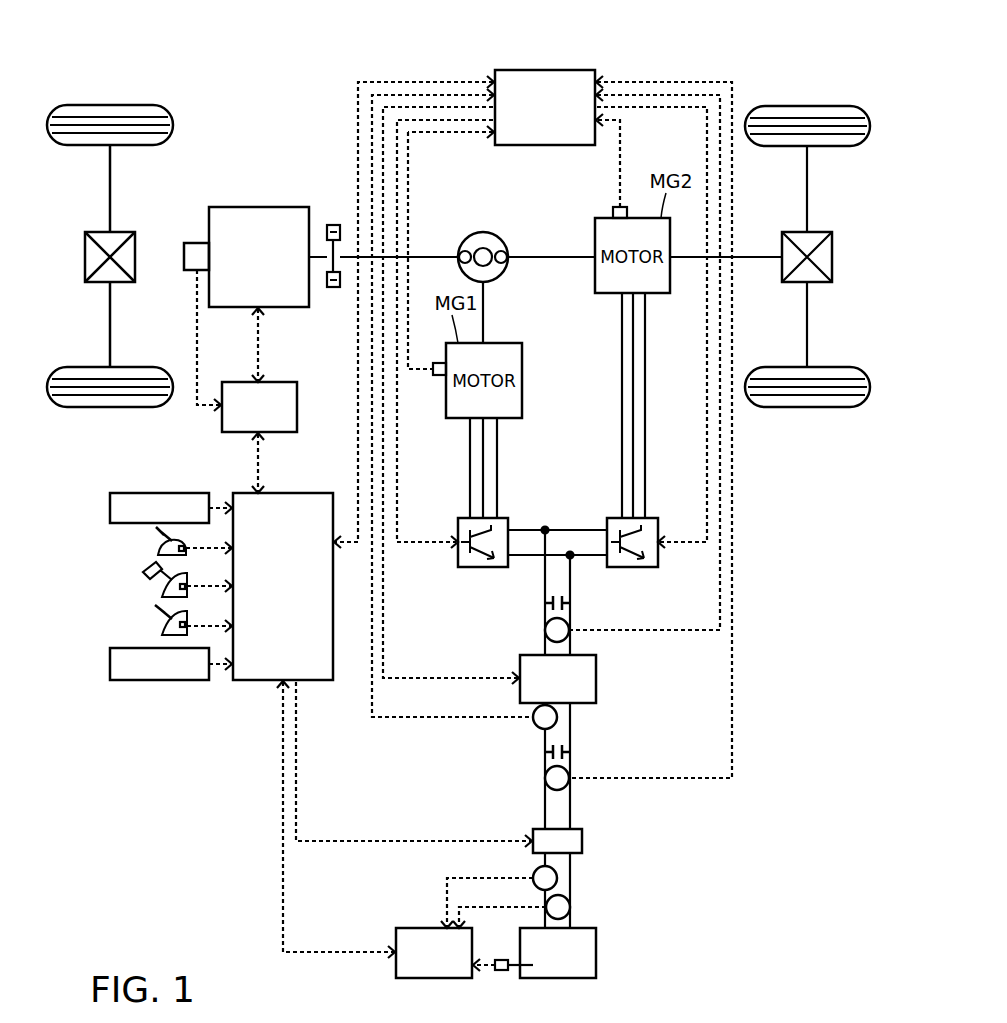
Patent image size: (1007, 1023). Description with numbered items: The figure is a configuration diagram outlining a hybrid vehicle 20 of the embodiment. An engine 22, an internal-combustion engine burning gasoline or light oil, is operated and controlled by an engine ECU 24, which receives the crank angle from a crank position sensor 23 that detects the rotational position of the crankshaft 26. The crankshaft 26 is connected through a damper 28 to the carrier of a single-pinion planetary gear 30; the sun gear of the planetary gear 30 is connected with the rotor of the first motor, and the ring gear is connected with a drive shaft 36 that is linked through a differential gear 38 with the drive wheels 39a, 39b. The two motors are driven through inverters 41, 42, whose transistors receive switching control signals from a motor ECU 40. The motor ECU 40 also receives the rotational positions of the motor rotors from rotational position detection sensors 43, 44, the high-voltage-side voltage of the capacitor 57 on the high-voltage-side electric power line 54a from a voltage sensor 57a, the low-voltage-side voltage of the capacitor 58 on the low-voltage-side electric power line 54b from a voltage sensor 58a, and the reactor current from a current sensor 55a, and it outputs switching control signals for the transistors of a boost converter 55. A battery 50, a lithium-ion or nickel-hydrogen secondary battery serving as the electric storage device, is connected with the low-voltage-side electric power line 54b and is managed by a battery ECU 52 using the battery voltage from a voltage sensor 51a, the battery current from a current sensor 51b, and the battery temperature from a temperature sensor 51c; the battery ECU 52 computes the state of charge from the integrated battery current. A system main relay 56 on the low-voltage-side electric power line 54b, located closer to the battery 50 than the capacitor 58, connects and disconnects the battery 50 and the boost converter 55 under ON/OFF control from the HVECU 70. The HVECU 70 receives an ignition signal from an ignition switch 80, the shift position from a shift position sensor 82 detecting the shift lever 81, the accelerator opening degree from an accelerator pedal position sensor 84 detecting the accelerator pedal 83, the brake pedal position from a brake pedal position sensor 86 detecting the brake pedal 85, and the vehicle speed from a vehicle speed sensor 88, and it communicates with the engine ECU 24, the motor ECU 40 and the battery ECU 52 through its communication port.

The hybrid vehicle 20 is at (662, 40).
The engine 22 is at (259, 207).
The crank position sensor 23 is at (197, 243).
The engine ECU 24 is at (282, 382).
The crankshaft 26 is at (313, 262).
The damper 28 is at (333, 225).
The planetary gear 30 is at (480, 232).
The drive shaft 36 is at (757, 257).
The differential gear 38 is at (818, 232).
The drive wheel 39a is at (808, 105).
The drive wheel 39b is at (808, 407).
The motor ECU 40 is at (546, 70).
The inverter 41 is at (500, 518).
The inverter 42 is at (650, 518).
The rotational position detection sensor 43 is at (436, 375).
The rotational position detection sensor 44 is at (627, 205).
The battery 50 is at (596, 953).
The voltage sensor 51a is at (570, 907).
The current sensor 51b is at (557, 878).
The temperature sensor 51c is at (501, 970).
The battery ECU 52 is at (422, 928).
The high-voltage-side electric power line 54a is at (570, 582).
The low-voltage-side electric power line 54b is at (570, 802).
The boost converter 55 is at (596, 680).
The current sensor 55a is at (557, 717).
The system main relay 56 is at (582, 841).
The capacitor 57 is at (572, 603).
The voltage sensor 57a is at (545, 630).
The capacitor 58 is at (572, 752).
The voltage sensor 58a is at (545, 778).
The HVECU 70 is at (291, 493).
The ignition switch 80 is at (110, 502).
The shift lever 81 is at (158, 534).
The shift position sensor 82 is at (180, 548).
The accelerator pedal 83 is at (148, 572).
The accelerator pedal position sensor 84 is at (182, 586).
The brake pedal 85 is at (160, 612).
The brake pedal position sensor 86 is at (182, 627).
The vehicle speed sensor 88 is at (110, 662).